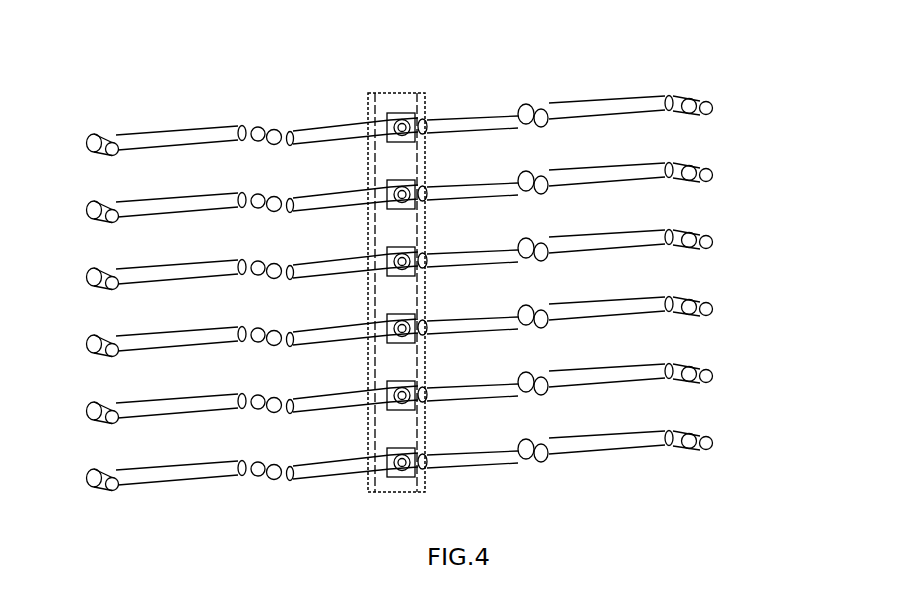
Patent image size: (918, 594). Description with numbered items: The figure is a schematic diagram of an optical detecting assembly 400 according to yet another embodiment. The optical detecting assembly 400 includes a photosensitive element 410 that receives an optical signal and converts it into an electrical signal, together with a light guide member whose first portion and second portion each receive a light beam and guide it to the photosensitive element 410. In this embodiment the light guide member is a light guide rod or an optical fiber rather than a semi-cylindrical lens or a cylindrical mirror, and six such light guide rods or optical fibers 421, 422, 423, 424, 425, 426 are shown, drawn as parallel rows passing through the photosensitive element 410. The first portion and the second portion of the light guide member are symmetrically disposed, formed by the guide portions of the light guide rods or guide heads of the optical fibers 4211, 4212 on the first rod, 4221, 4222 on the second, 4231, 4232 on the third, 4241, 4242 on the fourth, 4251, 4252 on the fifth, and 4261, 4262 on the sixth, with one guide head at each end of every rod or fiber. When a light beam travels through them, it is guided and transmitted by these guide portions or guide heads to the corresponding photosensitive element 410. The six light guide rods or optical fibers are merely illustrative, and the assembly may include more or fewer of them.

The optical detecting assembly 400 is at (563, 40).
The photosensitive element 410 is at (398, 372).
The light guide rod or optical fiber 421 is at (568, 103).
The light guide rod or optical fiber 422 is at (577, 170).
The light guide rod or optical fiber 423 is at (588, 237).
The light guide rod or optical fiber 424 is at (597, 304).
The light guide rod or optical fiber 425 is at (597, 371).
The light guide rod or optical fiber 426 is at (617, 438).
The guide portion or guide head 4211 is at (116, 143).
The guide portion or guide head 4212 is at (709, 103).
The guide portion or guide head 4221 is at (116, 210).
The guide portion or guide head 4222 is at (709, 170).
The guide portion or guide head 4231 is at (116, 277).
The guide portion or guide head 4232 is at (709, 237).
The guide portion or guide head 4241 is at (116, 344).
The guide portion or guide head 4242 is at (709, 304).
The guide portion or guide head 4251 is at (116, 411).
The guide portion or guide head 4252 is at (709, 371).
The guide portion or guide head 4261 is at (116, 478).
The guide portion or guide head 4262 is at (709, 438).